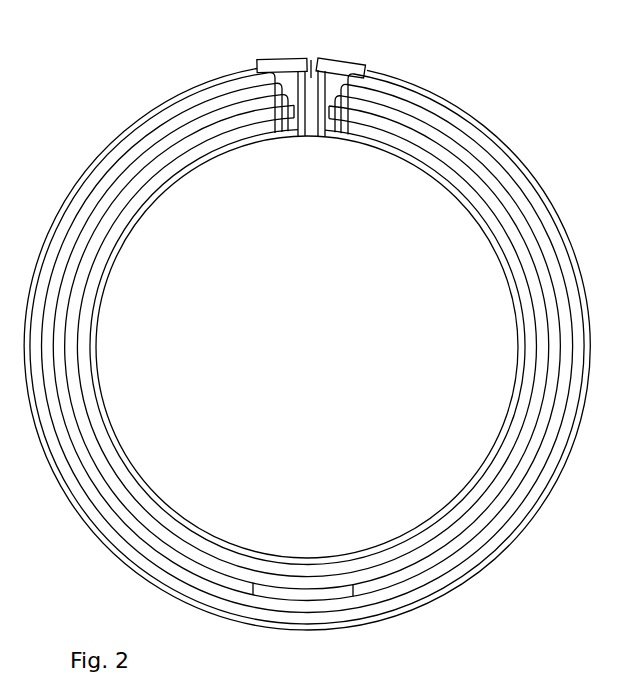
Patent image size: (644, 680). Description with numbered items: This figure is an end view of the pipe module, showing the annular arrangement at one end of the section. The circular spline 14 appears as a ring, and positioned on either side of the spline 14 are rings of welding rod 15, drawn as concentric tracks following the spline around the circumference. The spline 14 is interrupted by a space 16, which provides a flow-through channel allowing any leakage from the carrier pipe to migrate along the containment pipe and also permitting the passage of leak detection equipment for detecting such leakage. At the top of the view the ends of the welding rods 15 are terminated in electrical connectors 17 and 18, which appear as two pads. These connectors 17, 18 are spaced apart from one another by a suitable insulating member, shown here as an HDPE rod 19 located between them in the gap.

The circular spline 14 is at (158, 548).
The rings of welding rod 15 is at (228, 138).
The space 16 is at (292, 595).
The electrical connector 17 is at (278, 58).
The electrical connector 18 is at (342, 62).
The HDPE rod 19 is at (311, 60).